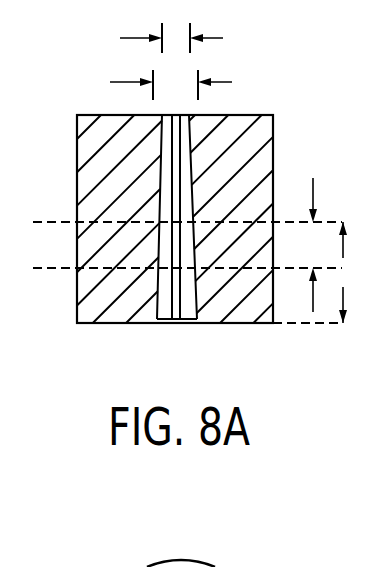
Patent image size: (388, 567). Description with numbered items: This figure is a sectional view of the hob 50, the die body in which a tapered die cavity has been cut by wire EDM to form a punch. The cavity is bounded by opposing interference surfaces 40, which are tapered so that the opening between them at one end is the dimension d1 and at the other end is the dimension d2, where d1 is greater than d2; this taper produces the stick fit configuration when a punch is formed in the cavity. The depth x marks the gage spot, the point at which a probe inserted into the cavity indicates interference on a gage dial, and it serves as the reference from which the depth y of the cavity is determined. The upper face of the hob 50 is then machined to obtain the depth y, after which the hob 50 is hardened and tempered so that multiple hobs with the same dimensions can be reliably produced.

The hob 50 is at (77, 197).
The interference surfaces 40 is at (177, 313).
The dimension d1 is at (171, 87).
The dimension d2 is at (171, 40).
The depth x is at (343, 272).
The depth y is at (313, 245).